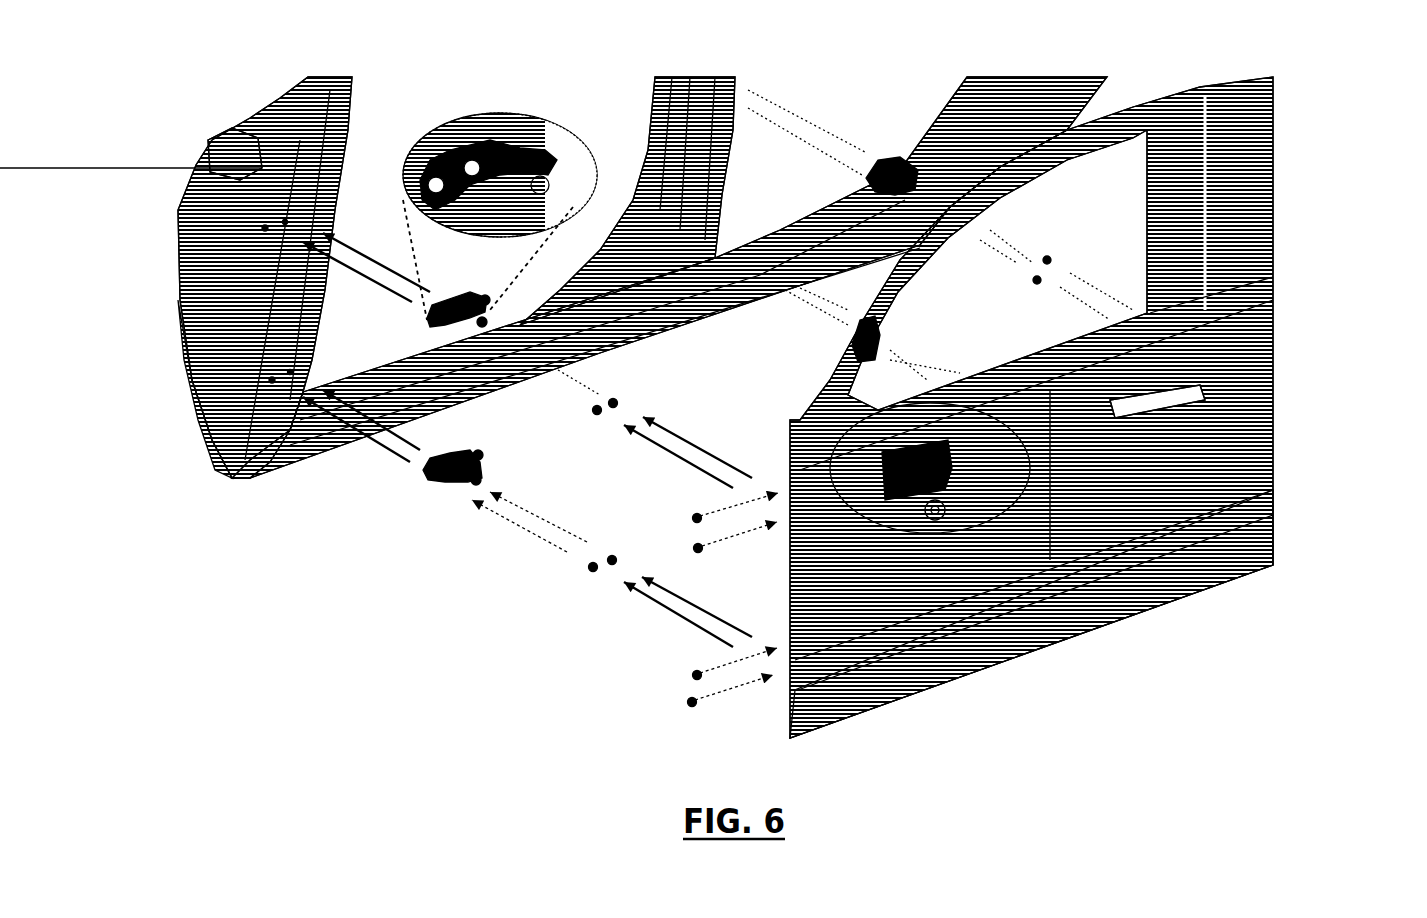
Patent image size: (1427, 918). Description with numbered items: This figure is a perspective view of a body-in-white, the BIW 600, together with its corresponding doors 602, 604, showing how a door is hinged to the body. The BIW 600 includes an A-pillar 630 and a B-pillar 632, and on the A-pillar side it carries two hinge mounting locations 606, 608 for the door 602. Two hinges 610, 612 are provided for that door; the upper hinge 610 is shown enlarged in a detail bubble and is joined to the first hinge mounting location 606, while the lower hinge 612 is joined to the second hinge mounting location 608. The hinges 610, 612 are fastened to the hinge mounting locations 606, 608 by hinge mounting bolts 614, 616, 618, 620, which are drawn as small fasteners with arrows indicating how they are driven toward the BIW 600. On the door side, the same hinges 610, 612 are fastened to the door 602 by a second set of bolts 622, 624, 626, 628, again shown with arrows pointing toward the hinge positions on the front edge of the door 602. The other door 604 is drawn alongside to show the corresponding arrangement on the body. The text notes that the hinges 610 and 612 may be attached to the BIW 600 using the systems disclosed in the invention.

The BIW 600 is at (305, 95).
The door 602 is at (1113, 628).
The door 604 is at (1280, 540).
The hinge mounting location 606 is at (263, 227).
The hinge mounting location 608 is at (272, 380).
The hinge 610 is at (470, 153).
The hinge 612 is at (467, 450).
The hinge mounting bolt 614 is at (600, 415).
The hinge mounting bolt 616 is at (617, 398).
The hinge mounting bolt 618 is at (592, 573).
The hinge mounting bolt 620 is at (617, 557).
The bolt 622 is at (693, 517).
The bolt 624 is at (697, 547).
The bolt 626 is at (693, 673).
The bolt 628 is at (690, 700).
The A-pillar 630 is at (187, 270).
The B-pillar 632 is at (720, 100).